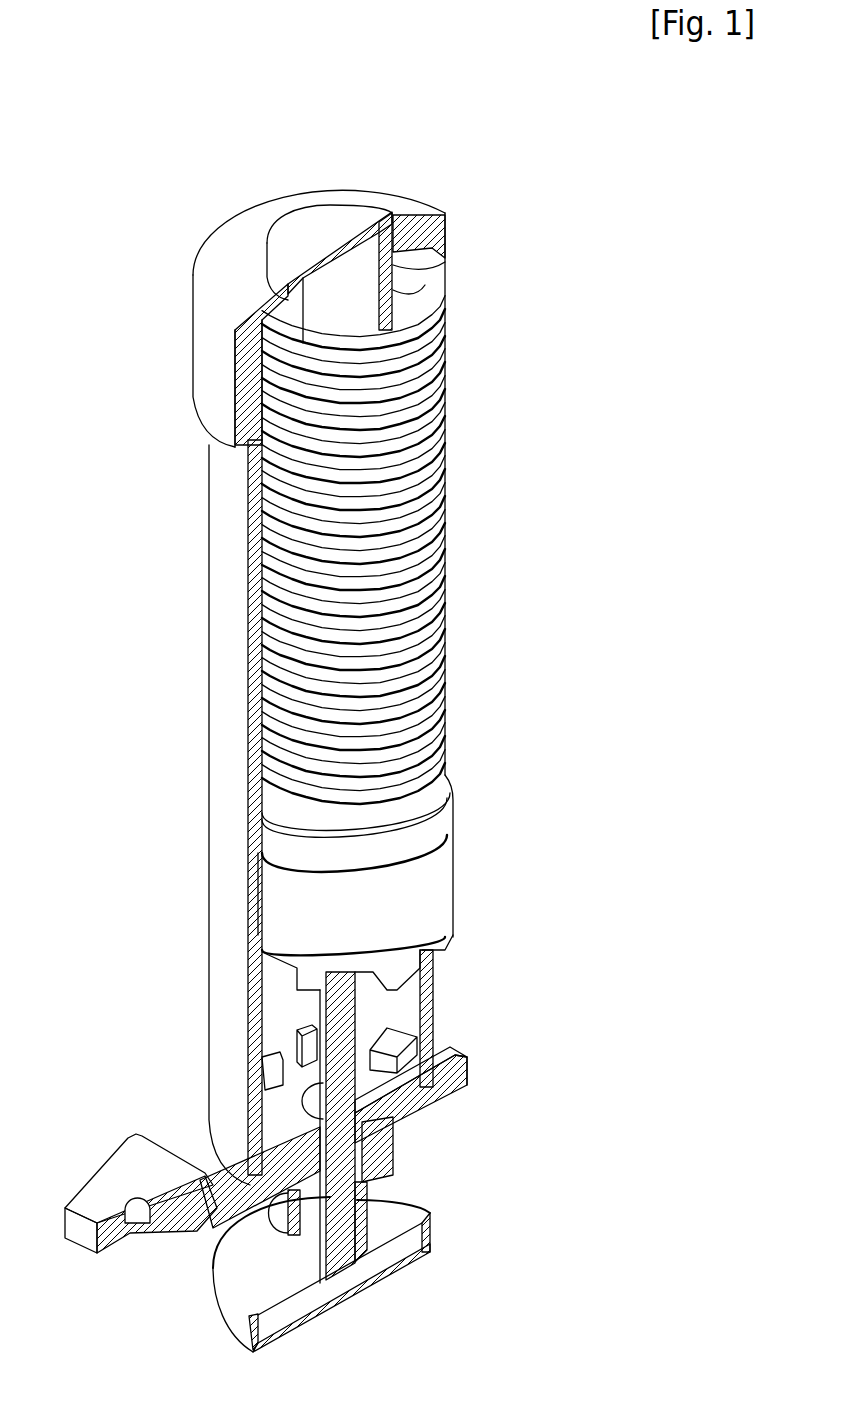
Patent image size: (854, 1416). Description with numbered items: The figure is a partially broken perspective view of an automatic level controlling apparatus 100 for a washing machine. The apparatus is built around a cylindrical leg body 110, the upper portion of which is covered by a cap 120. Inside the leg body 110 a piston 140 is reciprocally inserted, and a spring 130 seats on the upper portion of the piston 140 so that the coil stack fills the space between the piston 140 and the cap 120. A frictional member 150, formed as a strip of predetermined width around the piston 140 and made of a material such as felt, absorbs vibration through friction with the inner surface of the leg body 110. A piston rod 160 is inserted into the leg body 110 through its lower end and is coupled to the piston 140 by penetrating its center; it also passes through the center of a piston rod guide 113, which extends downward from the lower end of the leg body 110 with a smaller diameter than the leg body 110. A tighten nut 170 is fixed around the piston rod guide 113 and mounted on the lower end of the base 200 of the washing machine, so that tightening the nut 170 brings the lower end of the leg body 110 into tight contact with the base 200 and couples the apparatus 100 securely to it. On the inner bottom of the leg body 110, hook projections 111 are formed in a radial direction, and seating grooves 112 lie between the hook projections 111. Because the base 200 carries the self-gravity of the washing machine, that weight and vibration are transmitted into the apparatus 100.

The automatic level controlling apparatus 100 is at (455, 167).
The leg body 110 is at (255, 660).
The hook projections 111 is at (452, 1090).
The seating grooves 112 is at (360, 1042).
The piston rod guide 113 is at (262, 1226).
The cap 120 is at (212, 373).
The spring 130 is at (420, 520).
The piston 140 is at (308, 846).
The frictional member 150 is at (298, 904).
The piston rod 160 is at (343, 1225).
The tighten nut 170 is at (395, 1153).
The base 200 is at (468, 1068).